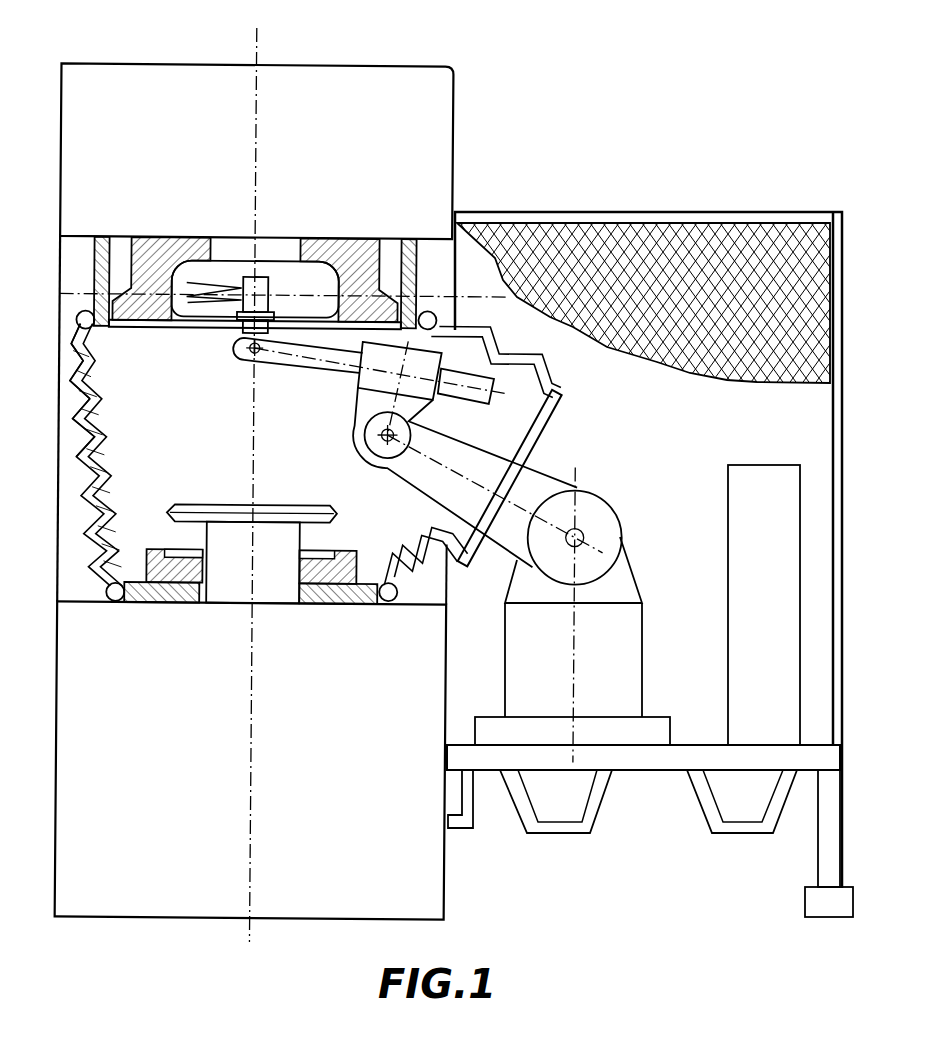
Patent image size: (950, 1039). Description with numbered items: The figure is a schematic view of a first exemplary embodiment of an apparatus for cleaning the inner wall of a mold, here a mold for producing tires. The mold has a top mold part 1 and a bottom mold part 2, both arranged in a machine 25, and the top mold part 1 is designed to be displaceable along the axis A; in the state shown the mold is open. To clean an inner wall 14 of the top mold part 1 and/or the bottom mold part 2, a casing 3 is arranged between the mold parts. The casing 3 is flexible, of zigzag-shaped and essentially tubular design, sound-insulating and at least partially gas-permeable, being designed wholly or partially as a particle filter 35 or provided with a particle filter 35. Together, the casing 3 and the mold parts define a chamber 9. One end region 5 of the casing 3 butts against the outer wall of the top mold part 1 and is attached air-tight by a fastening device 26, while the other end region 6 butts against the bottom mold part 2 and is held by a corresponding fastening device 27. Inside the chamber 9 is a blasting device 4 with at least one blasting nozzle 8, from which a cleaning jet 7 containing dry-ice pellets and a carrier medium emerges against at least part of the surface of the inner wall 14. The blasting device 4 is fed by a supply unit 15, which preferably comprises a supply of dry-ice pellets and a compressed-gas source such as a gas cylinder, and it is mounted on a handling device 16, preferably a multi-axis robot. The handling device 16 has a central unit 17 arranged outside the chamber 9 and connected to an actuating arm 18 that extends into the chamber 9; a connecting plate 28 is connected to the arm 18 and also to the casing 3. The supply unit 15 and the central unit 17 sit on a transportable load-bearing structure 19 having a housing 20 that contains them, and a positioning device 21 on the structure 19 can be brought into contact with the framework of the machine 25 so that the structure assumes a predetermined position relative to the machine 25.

The axis A is at (262, 47).
The top mold part 1 is at (150, 237).
The bottom mold part 2 is at (163, 603).
The casing 3 is at (91, 390).
The blasting device 4 is at (273, 265).
The end region 5 is at (50, 340).
The other end region 6 is at (50, 580).
The cleaning jet 7 is at (186, 280).
The blasting nozzle 8 is at (228, 283).
The chamber 9 is at (250, 448).
The inner wall 14 is at (163, 262).
The supply unit 15 is at (805, 572).
The handling device 16 is at (348, 395).
The central unit 17 is at (635, 528).
The actuating arm 18 is at (550, 465).
The load-bearing structure 19 is at (590, 207).
The housing 20 is at (690, 262).
The positioning device 21 is at (470, 845).
The machine 25 is at (400, 64).
The fastening device 26 is at (75, 322).
The fastening device 27 is at (117, 603).
The connecting plate 28 is at (540, 422).
The particle filter 35 is at (110, 426).